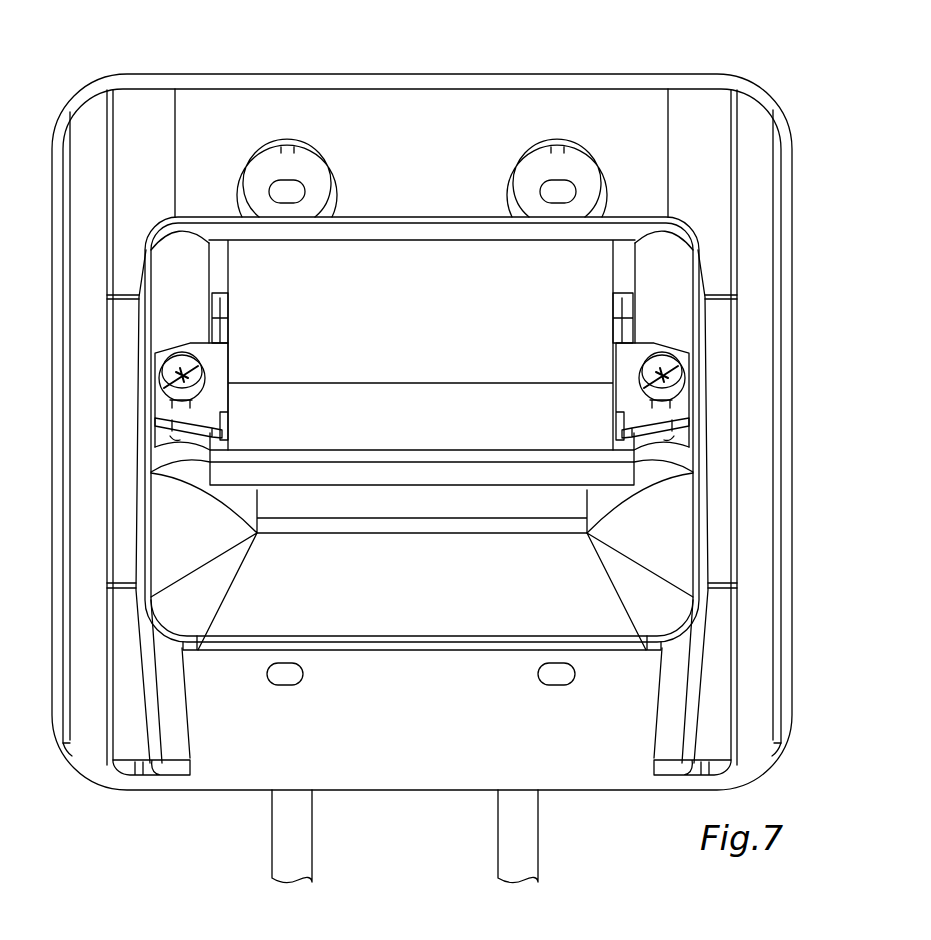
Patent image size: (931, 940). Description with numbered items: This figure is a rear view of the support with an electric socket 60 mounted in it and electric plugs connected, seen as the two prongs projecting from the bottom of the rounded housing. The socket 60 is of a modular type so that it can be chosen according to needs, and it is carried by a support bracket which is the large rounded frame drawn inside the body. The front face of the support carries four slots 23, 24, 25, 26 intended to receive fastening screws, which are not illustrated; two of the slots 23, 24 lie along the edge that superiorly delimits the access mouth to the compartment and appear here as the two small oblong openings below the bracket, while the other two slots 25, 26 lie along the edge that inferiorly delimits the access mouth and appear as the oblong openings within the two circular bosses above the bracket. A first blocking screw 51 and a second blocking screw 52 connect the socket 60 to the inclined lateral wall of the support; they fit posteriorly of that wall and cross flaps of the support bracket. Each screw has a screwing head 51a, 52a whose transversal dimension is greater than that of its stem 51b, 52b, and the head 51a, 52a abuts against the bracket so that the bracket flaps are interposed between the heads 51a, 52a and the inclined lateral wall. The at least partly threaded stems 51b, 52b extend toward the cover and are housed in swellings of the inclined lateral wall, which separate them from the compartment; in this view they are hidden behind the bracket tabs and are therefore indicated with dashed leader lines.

The socket 60 is at (442, 205).
The slot 26 is at (312, 177).
The slot 25 is at (584, 173).
The first blocking screw 51 is at (214, 369).
The second blocking screw 52 is at (632, 385).
The screwing head 51a is at (214, 397).
The screwing head 52a is at (640, 407).
The stem 51b is at (197, 422).
The stem 52b is at (684, 411).
The slot 24 is at (284, 699).
The slot 23 is at (552, 698).